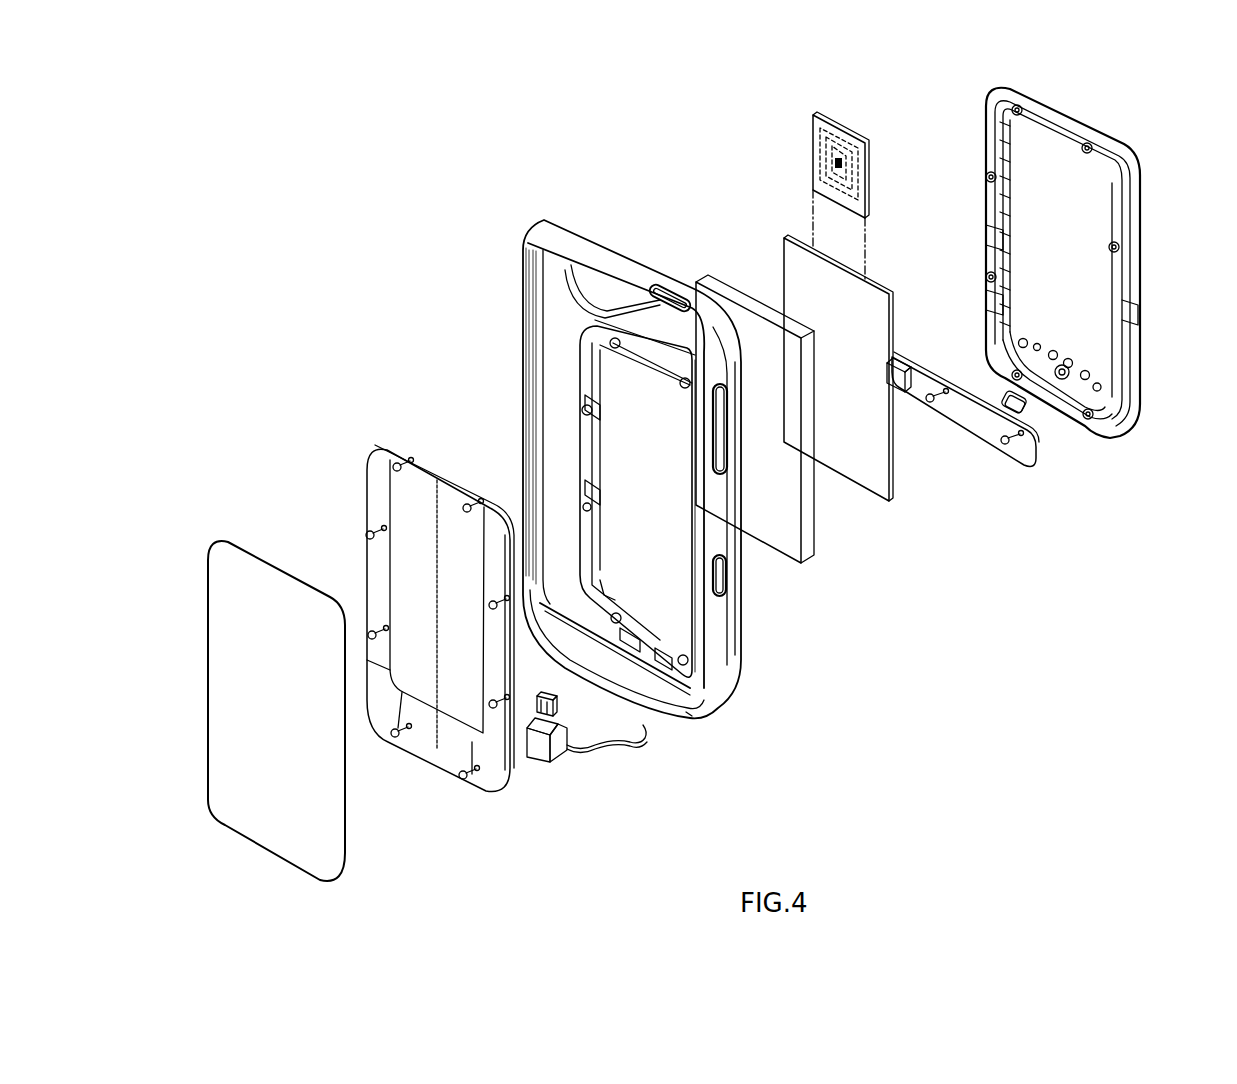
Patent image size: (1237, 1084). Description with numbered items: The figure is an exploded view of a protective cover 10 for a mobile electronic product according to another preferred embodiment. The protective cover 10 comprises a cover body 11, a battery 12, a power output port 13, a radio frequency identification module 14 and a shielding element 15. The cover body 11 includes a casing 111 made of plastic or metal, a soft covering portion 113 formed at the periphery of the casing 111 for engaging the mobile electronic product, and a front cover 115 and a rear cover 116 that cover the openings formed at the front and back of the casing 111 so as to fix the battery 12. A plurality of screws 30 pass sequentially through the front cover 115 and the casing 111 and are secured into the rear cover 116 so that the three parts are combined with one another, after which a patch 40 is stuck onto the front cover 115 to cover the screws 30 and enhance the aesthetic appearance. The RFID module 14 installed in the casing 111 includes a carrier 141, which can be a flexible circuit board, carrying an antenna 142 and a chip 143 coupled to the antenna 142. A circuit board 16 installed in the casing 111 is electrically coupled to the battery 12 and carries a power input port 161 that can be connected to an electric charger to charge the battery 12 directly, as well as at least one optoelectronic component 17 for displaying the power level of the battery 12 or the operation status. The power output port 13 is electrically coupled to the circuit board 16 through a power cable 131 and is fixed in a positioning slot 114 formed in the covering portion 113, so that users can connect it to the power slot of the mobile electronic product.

The protective cover 10 is at (513, 215).
The cover body 11 is at (581, 493).
The casing 111 is at (585, 376).
The covering portion 113 is at (553, 428).
The positioning slot 114 is at (708, 698).
The front cover 115 is at (442, 659).
The rear cover 116 is at (1087, 213).
The battery 12 is at (810, 517).
The power output port 13 is at (602, 752).
The power cable 131 is at (633, 747).
The radio frequency identification (RFID) module 14 is at (773, 196).
The carrier 141 is at (815, 118).
The antenna 142 is at (820, 160).
The chip 143 is at (836, 172).
The shielding element 15 is at (872, 437).
The circuit board 16 is at (1011, 385).
The power input port 161 is at (897, 360).
The optoelectronic component 17 is at (968, 392).
The screws 30 is at (364, 538).
The patch 40 is at (327, 793).